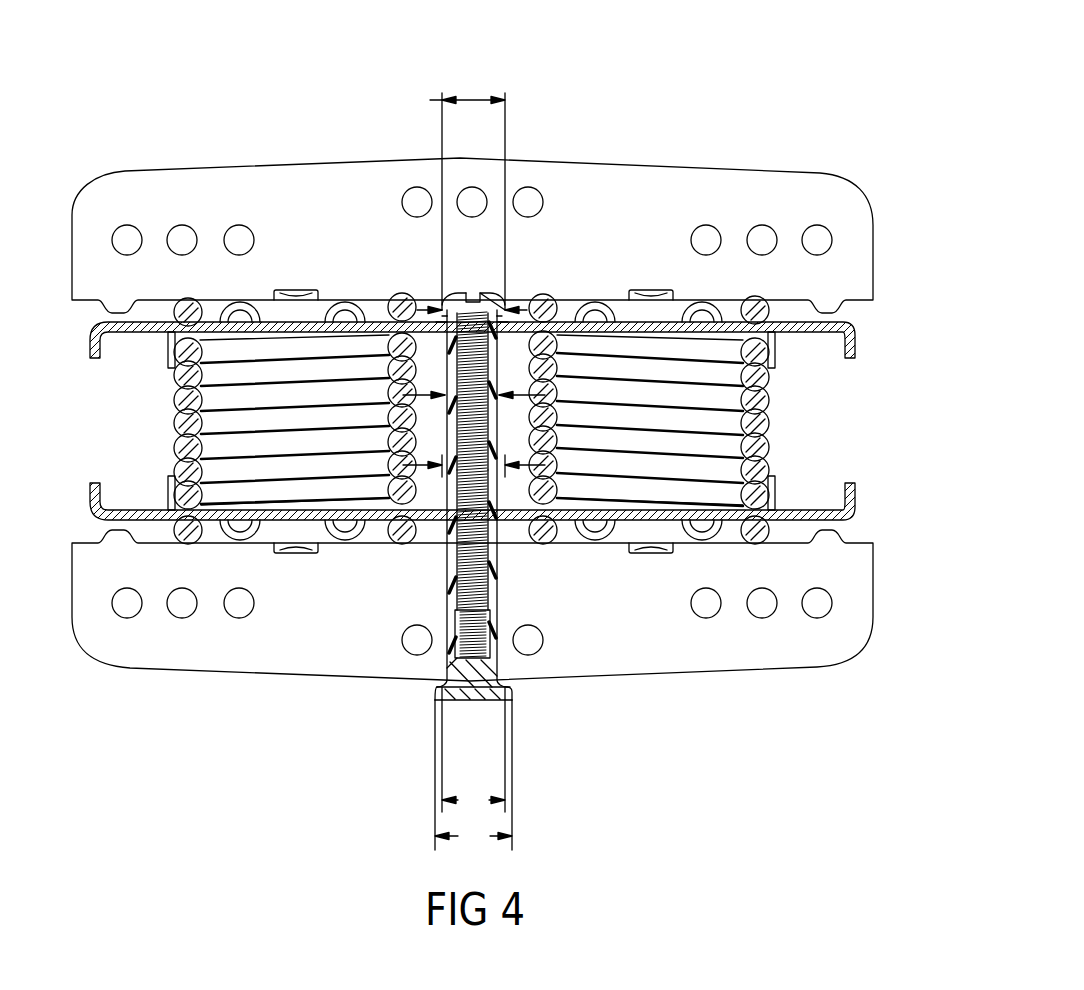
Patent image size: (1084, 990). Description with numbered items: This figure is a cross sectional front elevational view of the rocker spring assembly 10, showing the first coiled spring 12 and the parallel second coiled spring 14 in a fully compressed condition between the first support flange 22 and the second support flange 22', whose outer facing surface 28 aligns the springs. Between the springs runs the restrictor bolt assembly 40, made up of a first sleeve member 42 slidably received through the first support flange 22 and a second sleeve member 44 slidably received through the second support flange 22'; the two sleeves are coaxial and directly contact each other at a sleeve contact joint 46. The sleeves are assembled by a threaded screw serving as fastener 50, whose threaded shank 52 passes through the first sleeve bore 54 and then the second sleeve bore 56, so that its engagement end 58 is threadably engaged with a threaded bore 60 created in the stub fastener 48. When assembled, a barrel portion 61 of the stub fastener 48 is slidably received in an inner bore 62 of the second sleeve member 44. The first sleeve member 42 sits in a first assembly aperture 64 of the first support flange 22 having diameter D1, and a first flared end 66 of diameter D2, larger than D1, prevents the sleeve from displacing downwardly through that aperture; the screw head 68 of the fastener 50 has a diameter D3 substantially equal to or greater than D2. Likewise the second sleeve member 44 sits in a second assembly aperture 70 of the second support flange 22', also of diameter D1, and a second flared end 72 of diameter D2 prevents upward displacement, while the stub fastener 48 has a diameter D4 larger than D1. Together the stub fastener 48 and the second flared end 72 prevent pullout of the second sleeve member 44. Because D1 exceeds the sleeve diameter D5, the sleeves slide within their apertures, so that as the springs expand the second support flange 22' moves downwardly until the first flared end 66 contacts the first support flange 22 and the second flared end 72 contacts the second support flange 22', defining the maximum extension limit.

The rocker spring assembly 10 is at (705, 99).
The first coiled spring 12 is at (176, 455).
The second coiled spring 14 is at (760, 447).
The first support flange 22 is at (456, 349).
The second support flange 22' is at (454, 496).
The outer facing surface 28 is at (142, 313).
The restrictor bolt assembly 40 is at (447, 532).
The first sleeve member 42 is at (500, 335).
The second sleeve member 44 is at (441, 575).
The sleeve contact joint 46 is at (447, 500).
The stub fastener 48 is at (445, 700).
The fastener 50 is at (457, 294).
The threaded shank 52 is at (498, 342).
The first sleeve bore 54 is at (497, 488).
The second sleeve bore 56 is at (447, 556).
The engagement end 58 is at (505, 660).
The threaded bore 60 is at (456, 630).
The barrel portion 61 is at (470, 700).
The inner bore 62 is at (508, 690).
The first assembly aperture 64 is at (447, 338).
The first flared end 66 is at (388, 320).
The screw head 68 is at (486, 298).
The second assembly aperture 70 is at (499, 552).
The second flared end 72 is at (435, 690).
The diameter of the assembly apertures D1 is at (770, 465).
The diameter of the flared ends D2 is at (450, 450).
The diameter of the screw head D3 is at (542, 316).
The diameter of the stub fastener D4 is at (473, 775).
The diameter of the sleeve members D5 is at (760, 395).